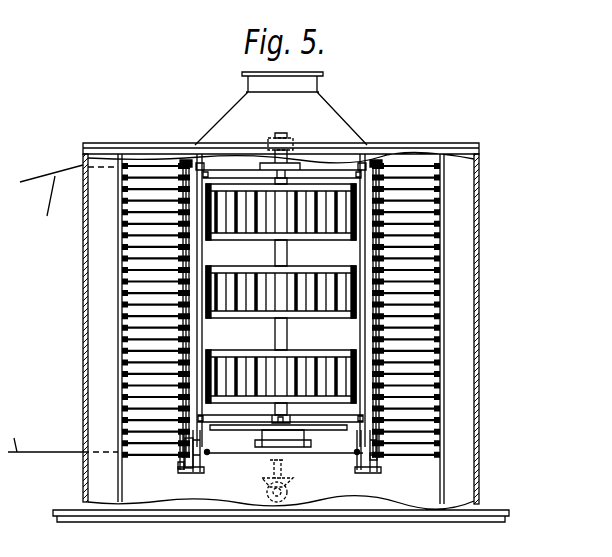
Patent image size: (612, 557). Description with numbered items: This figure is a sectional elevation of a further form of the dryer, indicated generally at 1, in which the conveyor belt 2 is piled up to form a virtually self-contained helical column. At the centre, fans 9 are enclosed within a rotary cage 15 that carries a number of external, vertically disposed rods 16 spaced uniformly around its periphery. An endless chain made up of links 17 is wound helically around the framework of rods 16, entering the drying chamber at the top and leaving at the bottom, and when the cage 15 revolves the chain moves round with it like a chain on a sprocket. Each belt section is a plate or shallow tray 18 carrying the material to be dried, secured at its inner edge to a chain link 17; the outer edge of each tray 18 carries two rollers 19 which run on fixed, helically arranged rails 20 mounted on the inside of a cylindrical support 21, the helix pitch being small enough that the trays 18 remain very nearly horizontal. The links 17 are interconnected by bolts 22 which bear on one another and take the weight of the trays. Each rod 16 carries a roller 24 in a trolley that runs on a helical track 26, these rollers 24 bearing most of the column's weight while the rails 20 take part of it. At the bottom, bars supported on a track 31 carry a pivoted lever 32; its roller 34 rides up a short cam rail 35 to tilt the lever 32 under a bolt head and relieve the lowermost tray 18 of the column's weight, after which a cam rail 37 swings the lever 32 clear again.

The housing top plate 1 is at (366, 150).
The conveyor belt 2 is at (150, 158).
The fans 9 is at (312, 273).
The rotary cage 15 is at (206, 181).
The rods 16 is at (185, 164).
The chain links 17 is at (190, 345).
The trays 18 is at (426, 233).
The rollers 19 is at (443, 277).
The rails 20 is at (440, 315).
The cylindrical support 21 is at (536, 460).
The bolts 22 is at (376, 392).
The rollers 24 is at (178, 464).
The helical track 26 is at (183, 472).
The track 31 is at (195, 472).
The lever 32 is at (358, 446).
The roller 34 is at (207, 453).
The cam rail 35 is at (208, 454).
The cam rail 37 is at (353, 453).